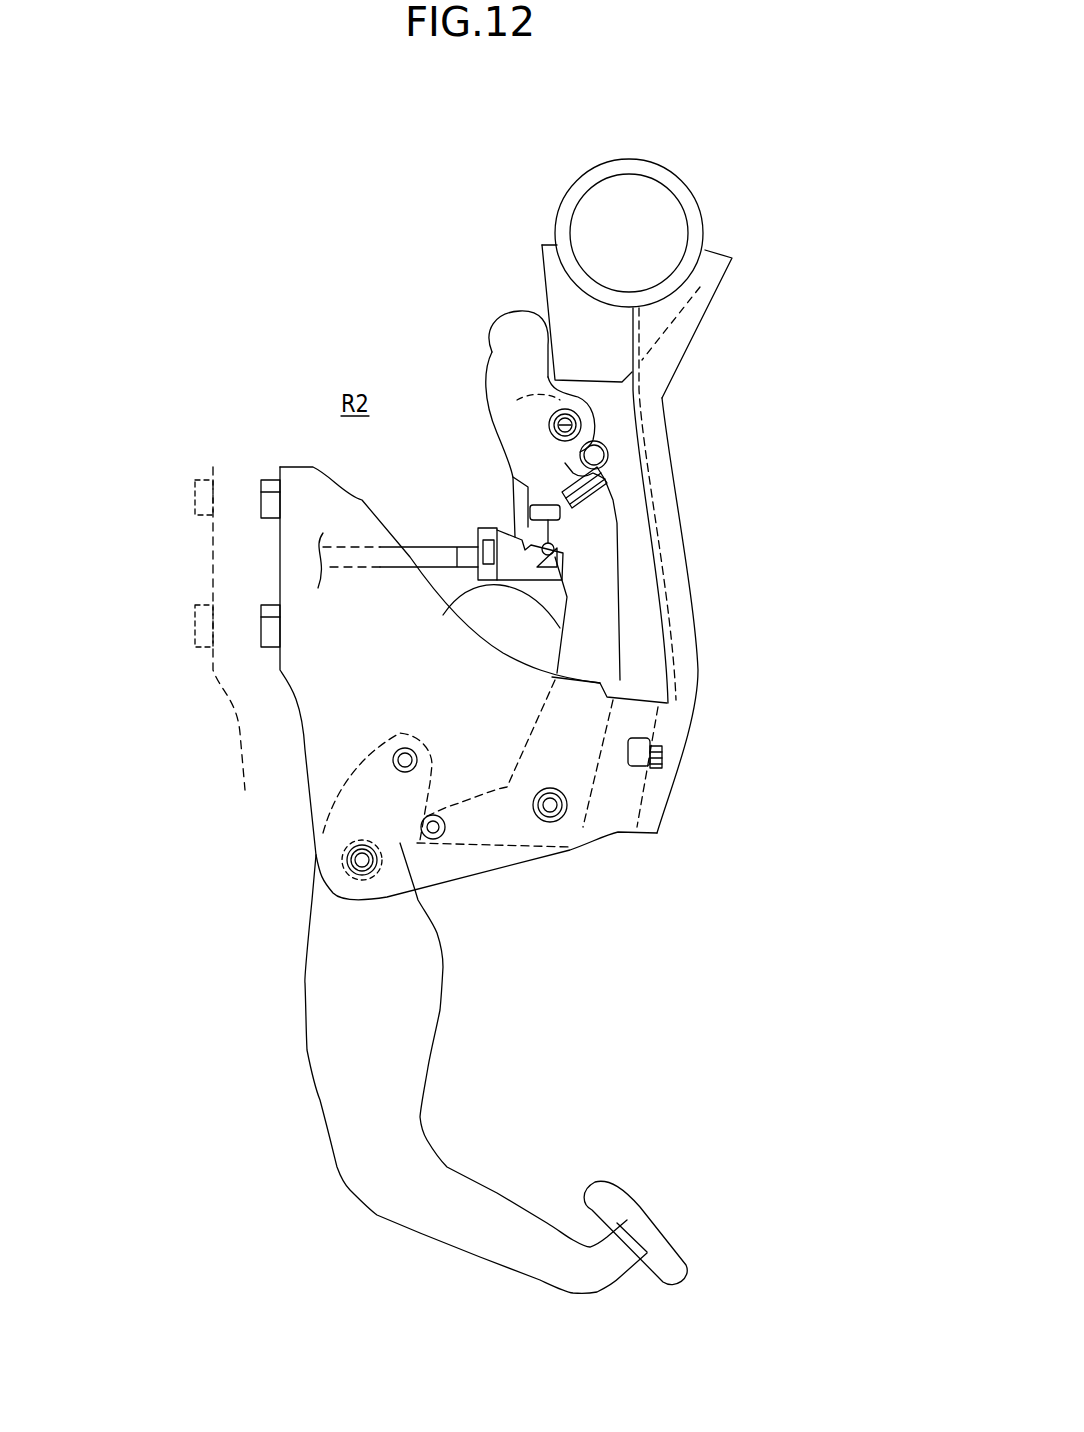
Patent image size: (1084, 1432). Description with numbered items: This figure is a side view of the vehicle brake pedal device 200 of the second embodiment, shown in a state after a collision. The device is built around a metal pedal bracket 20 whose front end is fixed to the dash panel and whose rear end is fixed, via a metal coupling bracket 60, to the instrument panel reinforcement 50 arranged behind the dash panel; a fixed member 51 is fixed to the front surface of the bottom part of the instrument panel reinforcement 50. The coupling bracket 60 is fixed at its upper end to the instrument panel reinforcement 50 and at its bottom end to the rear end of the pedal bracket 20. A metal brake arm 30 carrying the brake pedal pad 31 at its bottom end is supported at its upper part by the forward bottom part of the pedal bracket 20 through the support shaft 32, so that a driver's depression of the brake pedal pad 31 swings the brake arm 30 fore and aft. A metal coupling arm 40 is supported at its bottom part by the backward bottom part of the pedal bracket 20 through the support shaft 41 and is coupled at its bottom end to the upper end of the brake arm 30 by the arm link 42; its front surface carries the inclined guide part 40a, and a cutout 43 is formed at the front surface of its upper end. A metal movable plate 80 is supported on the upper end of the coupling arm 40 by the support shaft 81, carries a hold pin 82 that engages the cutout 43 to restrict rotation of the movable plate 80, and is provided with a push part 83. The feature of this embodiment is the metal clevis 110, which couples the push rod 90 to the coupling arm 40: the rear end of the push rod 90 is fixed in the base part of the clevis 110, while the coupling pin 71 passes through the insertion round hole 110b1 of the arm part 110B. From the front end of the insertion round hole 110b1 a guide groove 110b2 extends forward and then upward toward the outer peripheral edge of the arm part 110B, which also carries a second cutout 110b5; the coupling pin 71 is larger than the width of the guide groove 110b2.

The pedal bracket 20 is at (602, 823).
The brake arm 30 is at (423, 1057).
The brake pedal pad 31 is at (617, 1200).
The support shaft 32 is at (357, 863).
The coupling arm 40 is at (613, 650).
The guide part 40a is at (553, 602).
The support shaft 41 is at (543, 824).
The arm link 42 is at (433, 813).
The cutout 43 is at (567, 453).
The instrument panel reinforcement 50 is at (627, 165).
The fixed member 51 is at (543, 255).
The coupling bracket 60 is at (674, 462).
The coupling pin 71 is at (533, 552).
The movable plate 80 is at (492, 352).
The support shaft 81 is at (583, 427).
The hold pin 82 is at (610, 453).
The push part 83 is at (528, 512).
The push rod 90 is at (413, 547).
The clevis 110 is at (463, 545).
The arm part 110B is at (593, 530).
The insertion round hole 110b1 is at (575, 540).
The guide groove 110b2 is at (540, 548).
The second cutout 110b5 is at (570, 570).
The vehicle brake pedal device 200 is at (609, 897).